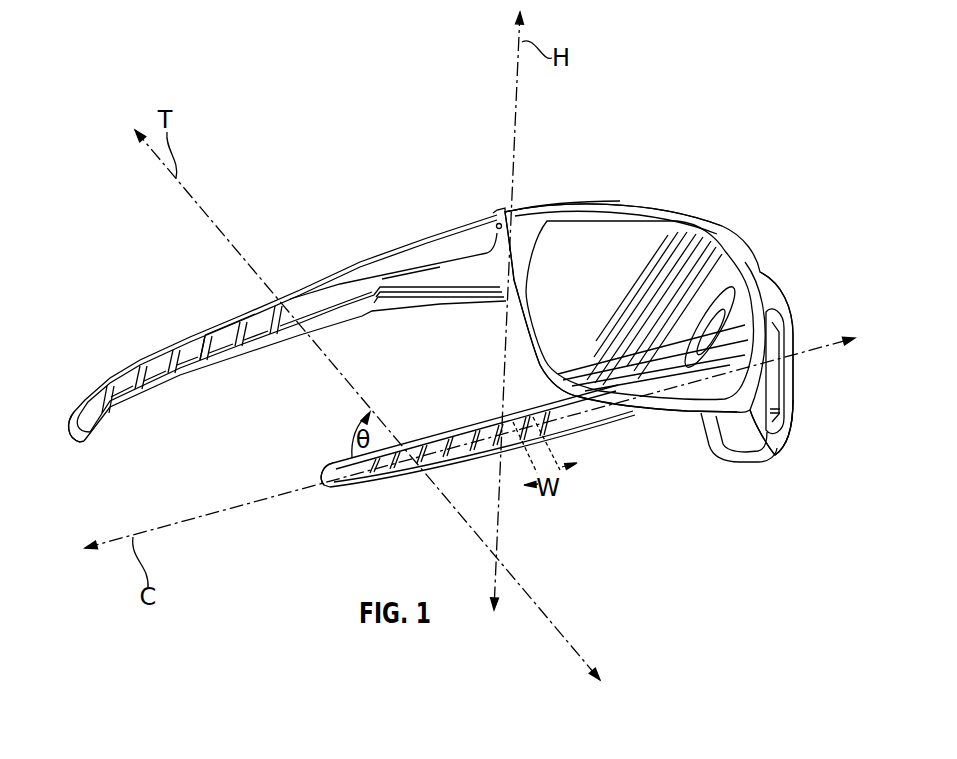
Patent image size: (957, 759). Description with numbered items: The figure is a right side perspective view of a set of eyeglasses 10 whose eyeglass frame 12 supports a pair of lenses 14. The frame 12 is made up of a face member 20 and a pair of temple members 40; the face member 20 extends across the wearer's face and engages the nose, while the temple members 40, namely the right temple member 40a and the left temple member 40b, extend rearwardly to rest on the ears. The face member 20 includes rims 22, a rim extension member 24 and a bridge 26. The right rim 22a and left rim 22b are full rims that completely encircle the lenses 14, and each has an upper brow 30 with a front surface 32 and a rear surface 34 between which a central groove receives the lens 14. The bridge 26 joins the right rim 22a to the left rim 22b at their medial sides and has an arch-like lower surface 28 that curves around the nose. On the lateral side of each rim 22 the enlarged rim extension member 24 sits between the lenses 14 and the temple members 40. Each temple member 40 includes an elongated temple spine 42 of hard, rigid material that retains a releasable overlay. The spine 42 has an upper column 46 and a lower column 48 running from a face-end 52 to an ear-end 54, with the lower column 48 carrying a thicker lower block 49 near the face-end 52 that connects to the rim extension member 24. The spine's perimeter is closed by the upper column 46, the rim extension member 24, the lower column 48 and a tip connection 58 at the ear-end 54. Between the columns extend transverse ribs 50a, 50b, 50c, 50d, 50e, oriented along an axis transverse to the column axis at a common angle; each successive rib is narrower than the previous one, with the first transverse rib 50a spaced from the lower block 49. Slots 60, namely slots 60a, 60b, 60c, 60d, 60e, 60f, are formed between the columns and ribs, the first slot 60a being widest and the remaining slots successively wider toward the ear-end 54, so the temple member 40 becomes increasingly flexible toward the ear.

The eyeglasses 10 is at (447, 340).
The face member 20 is at (667, 340).
The eyeglass frame 12 is at (659, 340).
The lenses 14 is at (653, 252).
The rims 22 is at (620, 397).
The right rim 22a is at (575, 222).
The left rim 22b is at (777, 448).
The rim extension member 24 is at (515, 230).
The bridge 26 is at (770, 293).
The lower surface 28 is at (777, 342).
The upper brow 30 is at (637, 200).
The front surface 32 is at (582, 390).
The rear surface 34 is at (707, 438).
The temple members 40 is at (335, 365).
The right temple member 40a is at (270, 321).
The left temple member 40b is at (478, 474).
The temple spine 42 is at (199, 352).
The upper column 46 is at (227, 316).
The lower column 48 is at (333, 328).
The lower block 49 is at (443, 293).
The face-end 52 is at (427, 237).
The ear-end 54 is at (80, 407).
The tip connection 58 is at (72, 433).
The slots 60 is at (402, 473).
The first slot 60a is at (340, 284).
The second slot 60b is at (217, 342).
The third slot 60c is at (173, 357).
The fourth slot 60d is at (147, 375).
The fifth slot 60e is at (115, 392).
The sixth slot 60f is at (95, 410).
The first transverse rib 50a is at (278, 345).
The second transverse rib 50b is at (243, 370).
The third transverse rib 50c is at (202, 383).
The fourth transverse rib 50d is at (160, 390).
The fifth transverse rib 50e is at (100, 414).